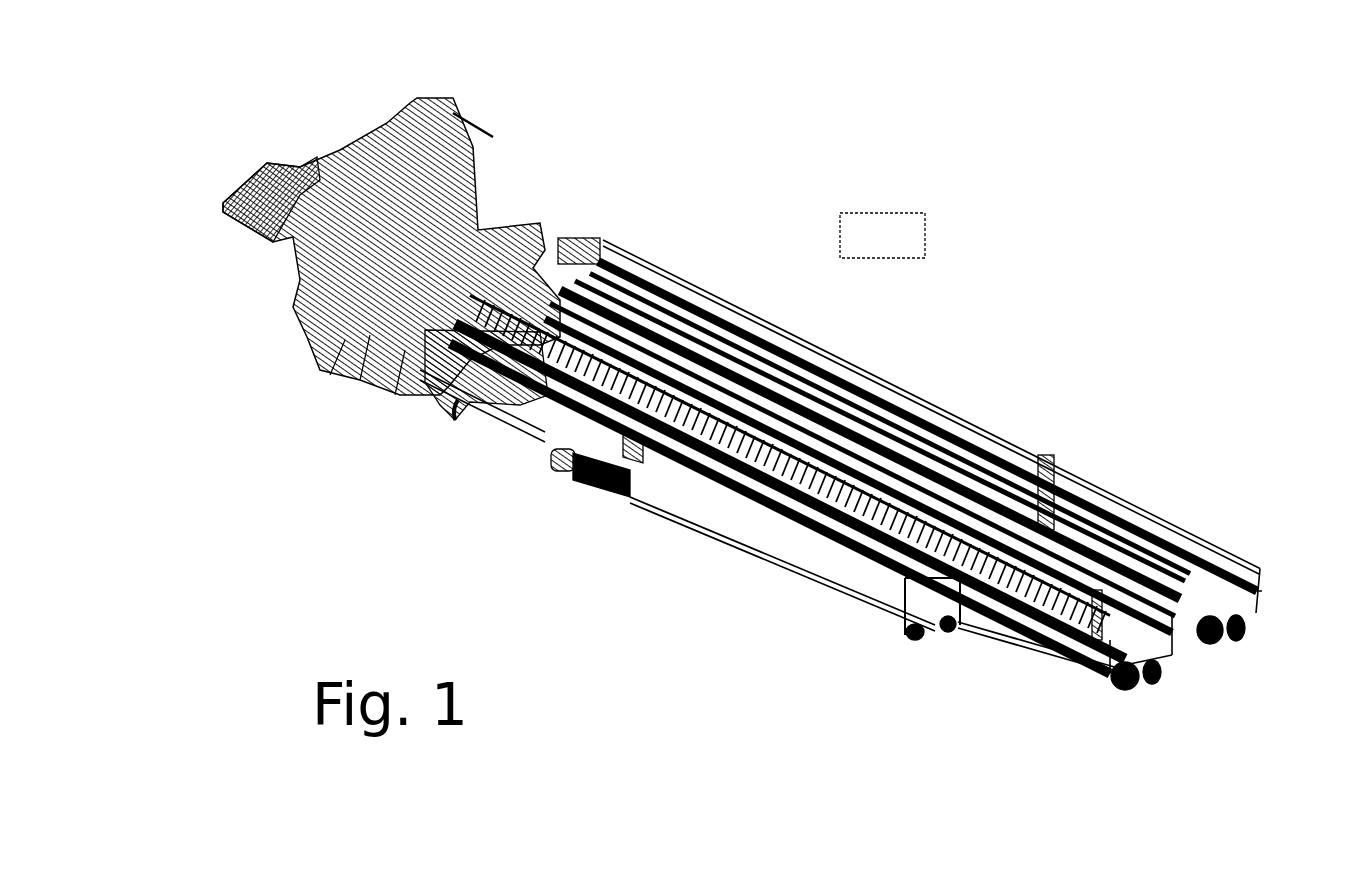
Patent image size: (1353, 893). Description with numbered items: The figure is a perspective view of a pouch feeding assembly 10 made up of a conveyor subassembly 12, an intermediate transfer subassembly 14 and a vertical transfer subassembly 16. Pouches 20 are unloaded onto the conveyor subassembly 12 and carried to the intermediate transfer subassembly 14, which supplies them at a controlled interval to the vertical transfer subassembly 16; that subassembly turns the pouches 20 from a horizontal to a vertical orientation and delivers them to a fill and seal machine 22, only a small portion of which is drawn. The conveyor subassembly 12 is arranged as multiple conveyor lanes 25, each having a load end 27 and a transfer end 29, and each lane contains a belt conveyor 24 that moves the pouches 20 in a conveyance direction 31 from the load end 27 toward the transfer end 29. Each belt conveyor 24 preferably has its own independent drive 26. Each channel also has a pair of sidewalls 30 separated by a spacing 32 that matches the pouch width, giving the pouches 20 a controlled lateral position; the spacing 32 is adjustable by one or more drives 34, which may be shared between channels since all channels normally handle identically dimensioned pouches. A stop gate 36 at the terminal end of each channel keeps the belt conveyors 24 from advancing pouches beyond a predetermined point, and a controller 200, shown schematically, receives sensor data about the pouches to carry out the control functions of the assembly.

The pouch feeding assembly 10 is at (995, 135).
The conveyor subassembly 12 is at (980, 354).
The intermediate transfer subassembly 14 is at (575, 186).
The vertical transfer subassembly 16 is at (233, 302).
The pouches 20 is at (575, 355).
The fill and seal machine 22 is at (234, 160).
The belt conveyor 24 is at (1135, 685).
The conveyor lanes 25 is at (1260, 600).
The independent drive 26 is at (455, 420).
The load end 27 is at (1225, 615).
The transfer end 29 is at (590, 268).
The sidewalls 30 is at (1125, 565).
The conveyance direction 31 is at (860, 530).
The spacing 32 is at (746, 352).
The drives 34 is at (600, 487).
The stop gate 36 is at (568, 248).
The controller 200 is at (882, 235).